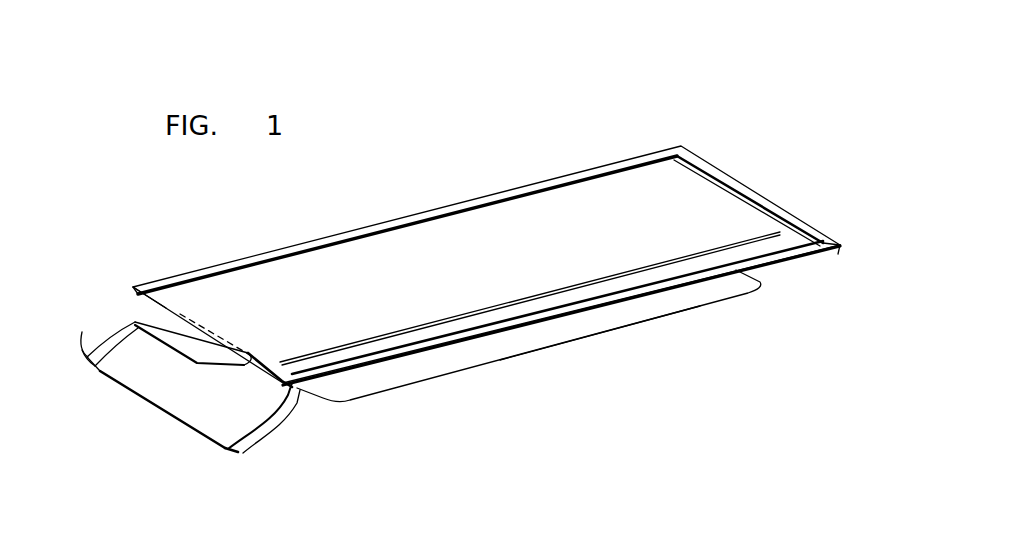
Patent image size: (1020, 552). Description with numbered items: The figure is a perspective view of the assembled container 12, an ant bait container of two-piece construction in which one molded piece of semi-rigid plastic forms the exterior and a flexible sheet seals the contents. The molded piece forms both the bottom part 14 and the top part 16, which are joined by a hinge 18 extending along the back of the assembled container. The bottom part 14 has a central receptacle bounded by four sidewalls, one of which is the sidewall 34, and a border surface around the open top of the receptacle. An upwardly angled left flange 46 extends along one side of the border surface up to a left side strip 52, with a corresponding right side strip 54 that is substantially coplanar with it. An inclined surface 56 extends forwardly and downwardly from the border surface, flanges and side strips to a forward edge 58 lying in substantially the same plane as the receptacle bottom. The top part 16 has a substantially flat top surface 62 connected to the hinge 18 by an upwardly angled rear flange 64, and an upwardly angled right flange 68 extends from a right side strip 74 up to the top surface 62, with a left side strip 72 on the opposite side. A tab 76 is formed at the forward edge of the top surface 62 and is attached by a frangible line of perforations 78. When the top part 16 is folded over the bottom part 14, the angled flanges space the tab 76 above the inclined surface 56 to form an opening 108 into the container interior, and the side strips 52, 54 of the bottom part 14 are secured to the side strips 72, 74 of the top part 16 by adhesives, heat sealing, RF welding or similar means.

The container 12 is at (641, 93).
The bottom part 14 is at (546, 365).
The top part 16 is at (421, 238).
The hinge 18 is at (842, 245).
The sidewall 34 is at (630, 318).
The left flange 46 is at (124, 362).
The left side strip 52 is at (94, 354).
The right side strip 54 is at (273, 447).
The inclined surface 56 is at (222, 433).
The forward edge 58 is at (158, 418).
The top surface 62 is at (538, 214).
The rear flange 64 is at (738, 186).
The right flange 68 is at (676, 265).
The left side strip 72 is at (178, 276).
The right side strip 74 is at (774, 262).
The tab 76 is at (195, 350).
The line of perforations 78 is at (195, 310).
The opening 108 is at (226, 382).